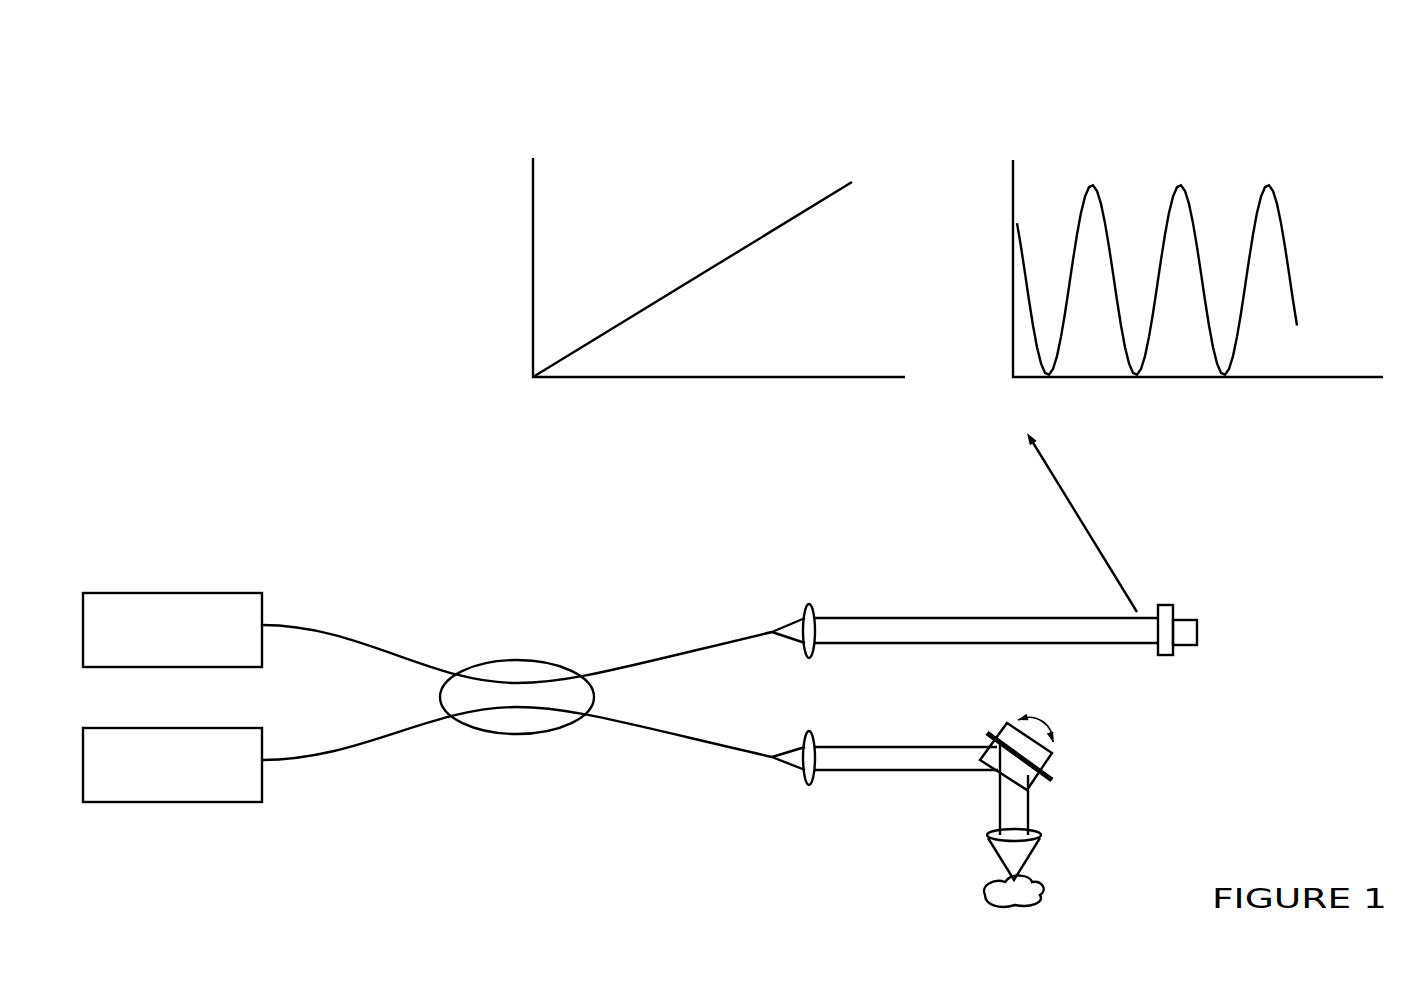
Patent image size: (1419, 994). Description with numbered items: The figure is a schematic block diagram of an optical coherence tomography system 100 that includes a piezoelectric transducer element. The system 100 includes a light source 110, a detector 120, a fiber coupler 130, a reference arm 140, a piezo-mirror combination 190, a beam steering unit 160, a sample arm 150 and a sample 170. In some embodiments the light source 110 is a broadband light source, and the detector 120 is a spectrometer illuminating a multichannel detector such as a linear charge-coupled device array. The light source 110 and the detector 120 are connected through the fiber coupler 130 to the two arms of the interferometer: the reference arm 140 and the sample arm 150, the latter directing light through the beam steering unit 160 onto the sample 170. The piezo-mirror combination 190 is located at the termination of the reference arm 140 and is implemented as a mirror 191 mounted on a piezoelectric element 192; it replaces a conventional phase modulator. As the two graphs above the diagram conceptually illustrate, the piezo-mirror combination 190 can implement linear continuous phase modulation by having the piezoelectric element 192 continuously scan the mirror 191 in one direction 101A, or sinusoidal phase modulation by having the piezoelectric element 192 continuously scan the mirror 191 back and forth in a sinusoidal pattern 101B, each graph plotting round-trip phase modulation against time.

The optical coherence tomography system 100 is at (274, 125).
The linear continuous phase modulation scan direction 101A is at (649, 267).
The sinusoidal pattern 101B is at (1130, 267).
The light source 110 is at (193, 659).
The detector 120 is at (193, 794).
The fiber coupler 130 is at (517, 669).
The reference arm 140 is at (964, 598).
The sample arm 150 is at (885, 734).
The beam steering unit 160 is at (1106, 774).
The sample 170 is at (1078, 869).
The piezo-mirror combination 190 is at (1220, 544).
The mirror 191 is at (1166, 590).
The piezoelectric element 192 is at (1204, 606).